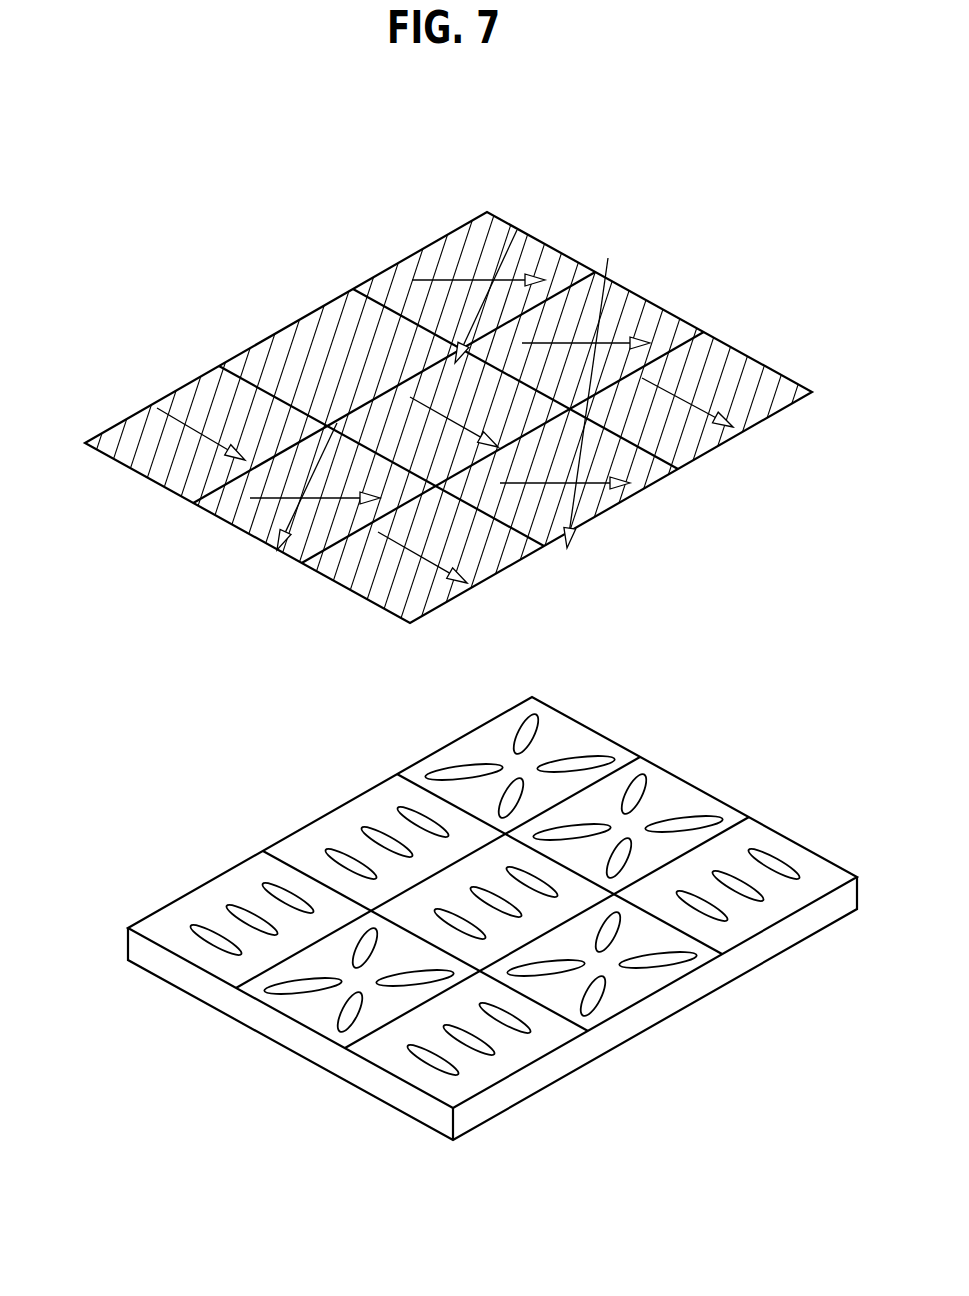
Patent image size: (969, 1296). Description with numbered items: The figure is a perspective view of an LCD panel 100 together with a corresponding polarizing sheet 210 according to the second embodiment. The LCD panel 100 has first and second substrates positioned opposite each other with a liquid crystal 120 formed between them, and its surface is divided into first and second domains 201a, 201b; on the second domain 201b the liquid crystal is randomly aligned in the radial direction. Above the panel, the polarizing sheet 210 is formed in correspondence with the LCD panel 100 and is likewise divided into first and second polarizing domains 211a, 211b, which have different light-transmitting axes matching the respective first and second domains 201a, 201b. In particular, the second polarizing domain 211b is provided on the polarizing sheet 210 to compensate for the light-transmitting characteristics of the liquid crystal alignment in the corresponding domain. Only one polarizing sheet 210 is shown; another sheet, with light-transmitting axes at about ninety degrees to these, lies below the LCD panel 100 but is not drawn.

The polarizing sheet 210 is at (713, 450).
The first polarizing domain 211a is at (162, 470).
The second polarizing domain 211b is at (260, 525).
The LCD panel 100 is at (470, 906).
The liquid crystal 120 is at (773, 847).
The first domain 201a is at (208, 953).
The second domain 201b is at (565, 735).